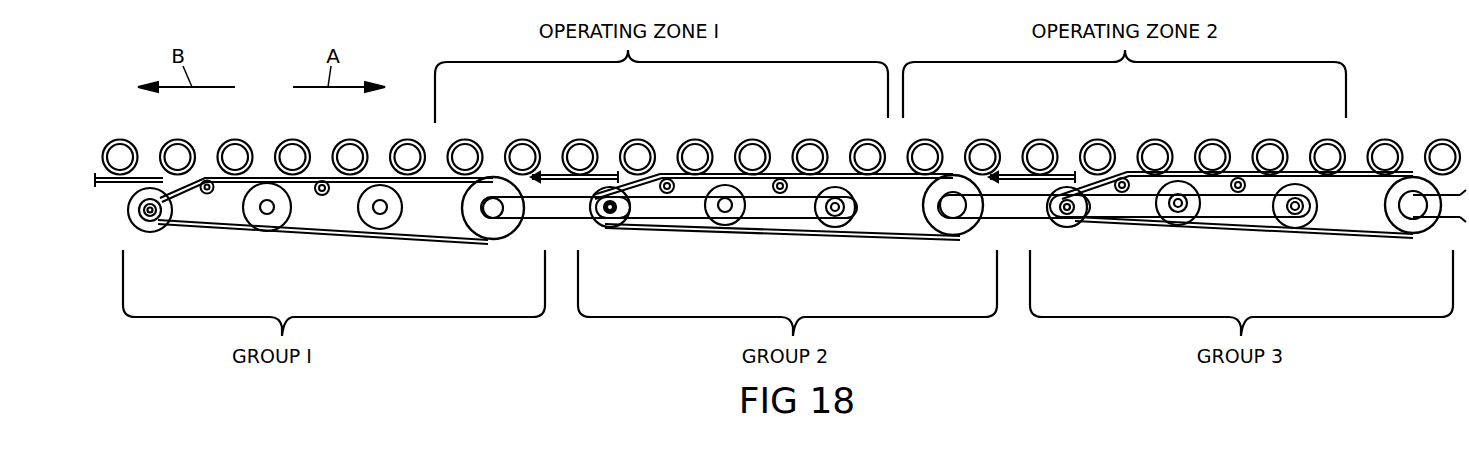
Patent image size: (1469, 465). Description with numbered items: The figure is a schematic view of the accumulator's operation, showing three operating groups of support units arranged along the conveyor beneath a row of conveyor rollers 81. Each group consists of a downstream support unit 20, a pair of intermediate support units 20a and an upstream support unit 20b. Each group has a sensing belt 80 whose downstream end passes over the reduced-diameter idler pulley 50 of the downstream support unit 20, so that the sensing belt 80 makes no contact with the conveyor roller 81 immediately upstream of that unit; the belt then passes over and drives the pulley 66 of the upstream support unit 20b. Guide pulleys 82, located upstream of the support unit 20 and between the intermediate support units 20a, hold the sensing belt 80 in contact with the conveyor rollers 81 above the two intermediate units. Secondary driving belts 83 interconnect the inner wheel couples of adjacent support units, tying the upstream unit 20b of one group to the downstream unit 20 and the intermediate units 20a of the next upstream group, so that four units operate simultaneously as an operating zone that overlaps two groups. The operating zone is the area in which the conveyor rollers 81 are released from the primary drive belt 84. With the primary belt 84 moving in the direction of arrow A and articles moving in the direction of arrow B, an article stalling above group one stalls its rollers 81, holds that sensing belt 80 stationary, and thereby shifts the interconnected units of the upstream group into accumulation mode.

The downstream support unit 20 is at (150, 229).
The intermediate support unit 20a is at (278, 216).
The upstream support unit 20b is at (486, 229).
The idler pulley 50 is at (168, 224).
The pulley 66 is at (463, 203).
The sensing belt 80 is at (212, 226).
The conveyor roller 81 is at (471, 144).
The guide pulley 82 is at (206, 180).
The secondary driving belt 83 is at (973, 229).
The primary drive belt 84 is at (97, 177).